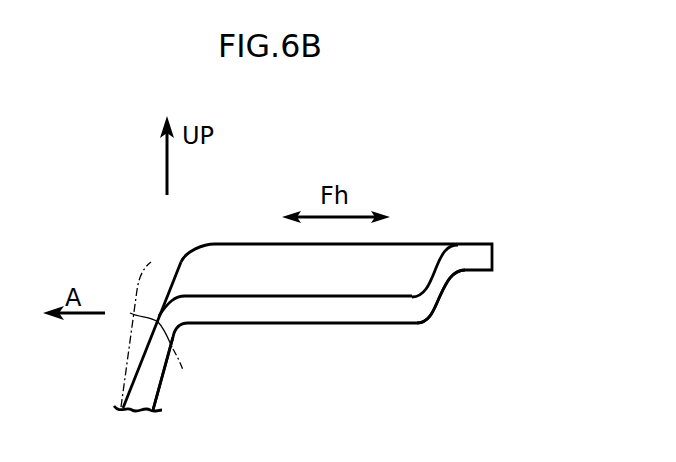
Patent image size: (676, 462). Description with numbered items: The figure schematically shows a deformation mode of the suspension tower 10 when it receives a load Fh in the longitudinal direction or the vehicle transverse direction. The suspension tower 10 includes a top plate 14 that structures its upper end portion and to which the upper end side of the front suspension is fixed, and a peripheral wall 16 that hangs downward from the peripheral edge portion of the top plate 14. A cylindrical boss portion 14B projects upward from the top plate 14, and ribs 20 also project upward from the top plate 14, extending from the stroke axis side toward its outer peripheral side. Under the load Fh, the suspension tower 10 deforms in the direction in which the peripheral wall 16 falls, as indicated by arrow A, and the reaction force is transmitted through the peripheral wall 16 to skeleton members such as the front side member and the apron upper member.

The suspension tower 10 is at (442, 204).
The top plate 14 is at (328, 311).
The boss portion 14B is at (440, 288).
The peripheral wall 16 is at (152, 367).
The ribs 20 is at (152, 262).